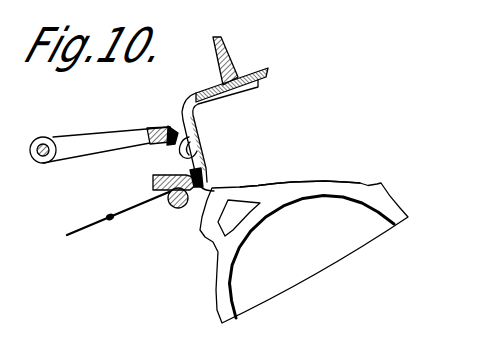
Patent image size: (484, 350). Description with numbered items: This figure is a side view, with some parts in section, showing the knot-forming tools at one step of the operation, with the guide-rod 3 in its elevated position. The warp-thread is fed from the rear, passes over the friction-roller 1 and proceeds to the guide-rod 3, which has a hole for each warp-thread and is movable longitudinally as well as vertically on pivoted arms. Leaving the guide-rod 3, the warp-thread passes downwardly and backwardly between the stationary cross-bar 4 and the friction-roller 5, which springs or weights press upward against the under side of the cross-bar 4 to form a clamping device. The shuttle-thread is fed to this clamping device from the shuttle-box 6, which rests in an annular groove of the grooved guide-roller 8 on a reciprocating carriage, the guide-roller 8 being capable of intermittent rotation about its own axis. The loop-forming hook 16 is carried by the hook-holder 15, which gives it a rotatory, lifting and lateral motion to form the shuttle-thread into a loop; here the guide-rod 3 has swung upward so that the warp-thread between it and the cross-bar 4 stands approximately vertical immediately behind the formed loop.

The friction-roller 1 is at (176, 131).
The guide-rod 3 is at (159, 122).
The stationary cross-bar 4 is at (152, 183).
The friction-roller 5 is at (168, 205).
The shuttle-box 6 is at (336, 248).
The shuttle-box guide-roller 8 is at (280, 190).
The hook-holder 15 is at (255, 67).
The loop-forming hook 16 is at (208, 135).